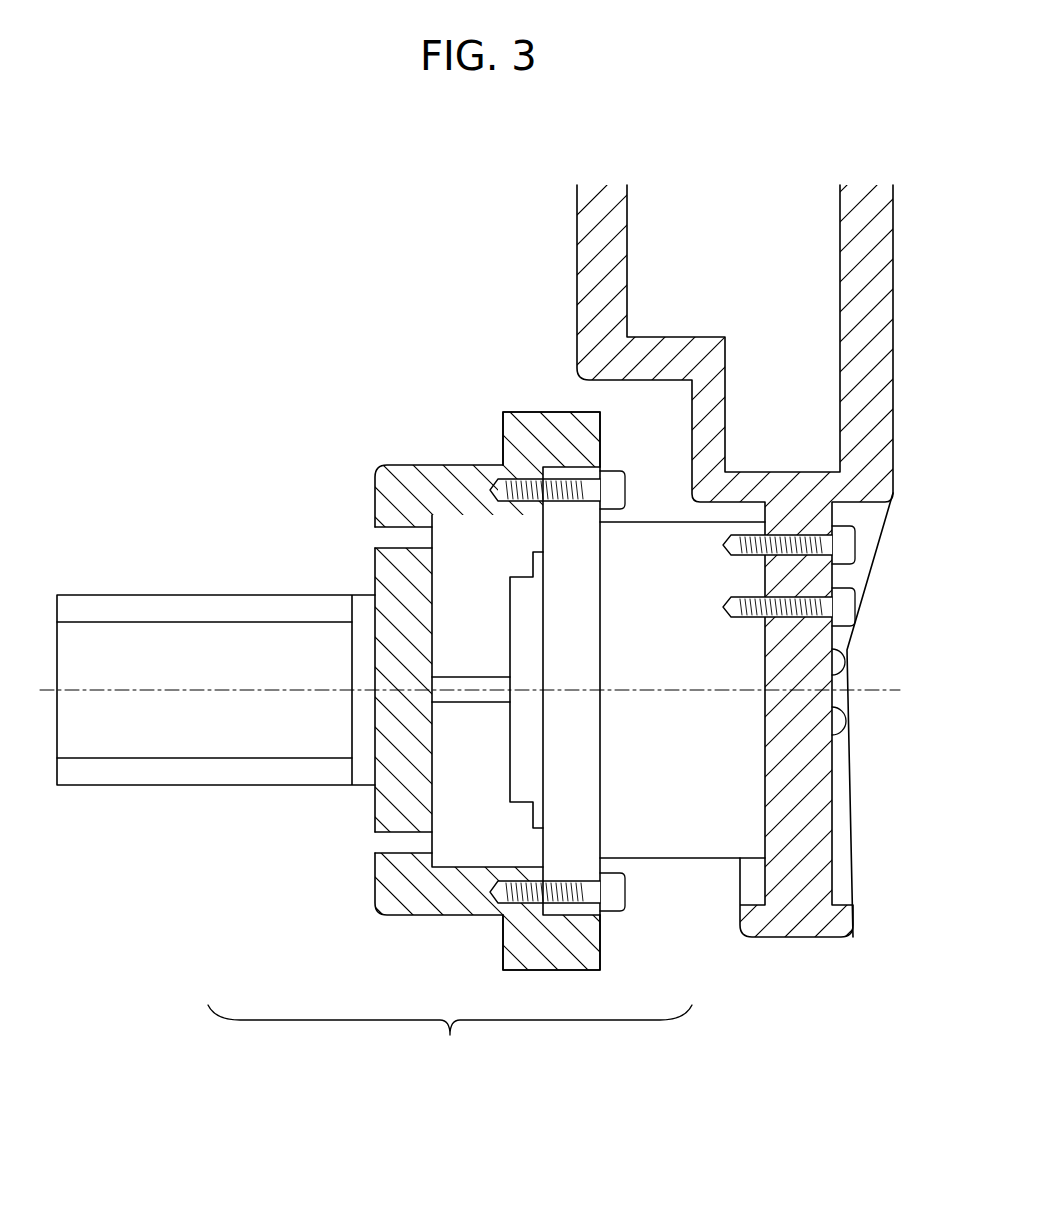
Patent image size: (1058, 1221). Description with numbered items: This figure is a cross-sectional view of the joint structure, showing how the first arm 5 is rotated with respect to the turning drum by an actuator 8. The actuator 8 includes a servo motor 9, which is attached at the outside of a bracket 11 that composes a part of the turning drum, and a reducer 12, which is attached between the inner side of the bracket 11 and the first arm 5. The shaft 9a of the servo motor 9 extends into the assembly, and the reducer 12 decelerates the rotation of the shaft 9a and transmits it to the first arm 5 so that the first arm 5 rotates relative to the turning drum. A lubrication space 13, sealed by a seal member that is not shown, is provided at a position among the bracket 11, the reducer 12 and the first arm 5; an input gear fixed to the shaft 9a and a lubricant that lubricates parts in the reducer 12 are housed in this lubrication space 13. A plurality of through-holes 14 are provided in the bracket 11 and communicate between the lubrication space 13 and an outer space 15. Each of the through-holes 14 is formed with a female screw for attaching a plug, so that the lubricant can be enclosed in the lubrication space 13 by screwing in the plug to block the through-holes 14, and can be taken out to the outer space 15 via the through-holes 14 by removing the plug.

The first arm 5 is at (895, 290).
The actuator 8 is at (450, 1037).
The servo motor 9 is at (210, 787).
The shaft 9a is at (467, 702).
The bracket 11 is at (517, 410).
The reducer 12 is at (673, 858).
The lubrication space 13 is at (432, 565).
The through-holes 14 is at (377, 846).
The outer space 15 is at (205, 540).